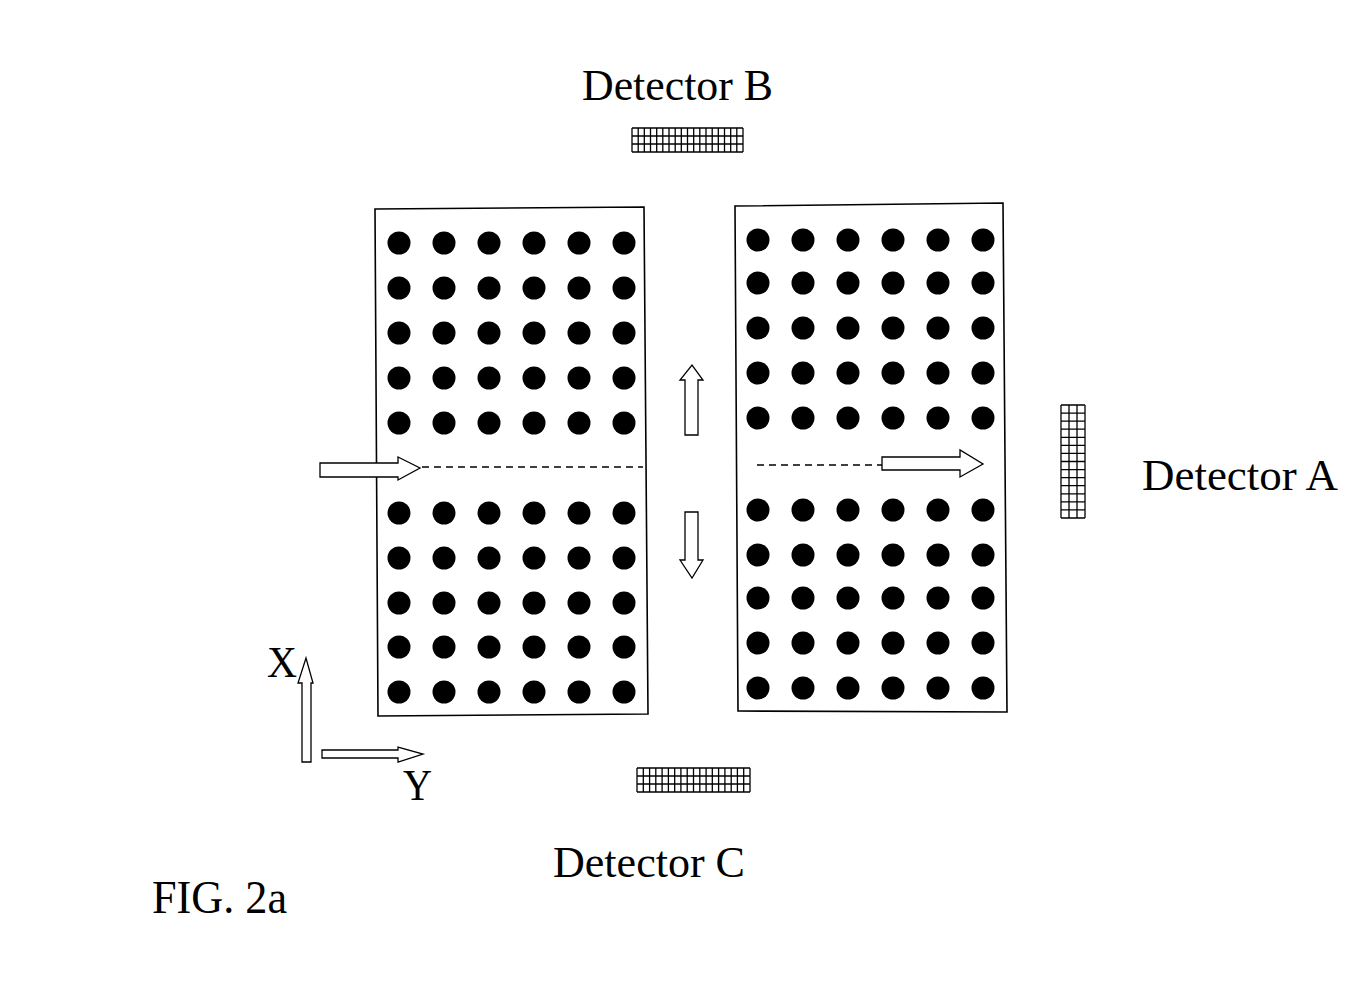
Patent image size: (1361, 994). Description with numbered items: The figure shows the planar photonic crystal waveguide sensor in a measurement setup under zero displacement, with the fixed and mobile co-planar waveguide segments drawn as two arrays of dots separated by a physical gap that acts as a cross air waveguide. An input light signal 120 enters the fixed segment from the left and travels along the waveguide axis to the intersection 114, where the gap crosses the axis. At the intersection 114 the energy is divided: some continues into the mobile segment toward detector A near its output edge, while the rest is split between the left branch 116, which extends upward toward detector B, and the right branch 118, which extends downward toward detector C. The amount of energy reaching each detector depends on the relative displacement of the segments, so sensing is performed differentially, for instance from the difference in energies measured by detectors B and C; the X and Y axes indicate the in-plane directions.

The intersection 114 is at (690, 467).
The left branch 116 is at (690, 295).
The right branch 118 is at (682, 633).
The input light signal 120 is at (340, 457).